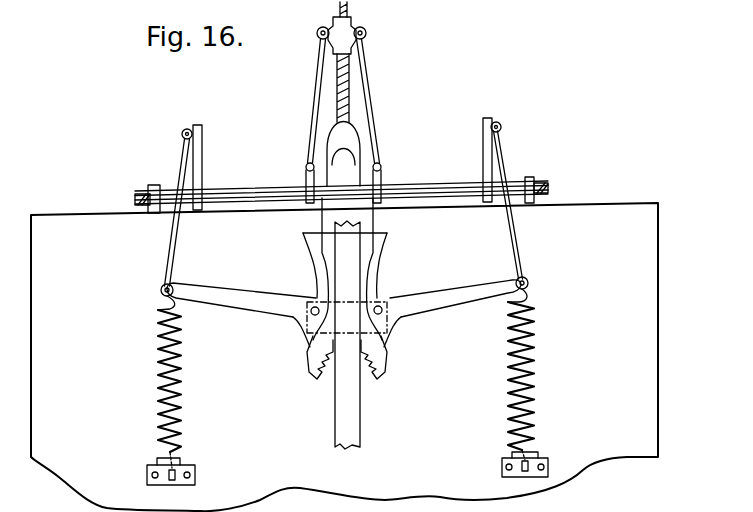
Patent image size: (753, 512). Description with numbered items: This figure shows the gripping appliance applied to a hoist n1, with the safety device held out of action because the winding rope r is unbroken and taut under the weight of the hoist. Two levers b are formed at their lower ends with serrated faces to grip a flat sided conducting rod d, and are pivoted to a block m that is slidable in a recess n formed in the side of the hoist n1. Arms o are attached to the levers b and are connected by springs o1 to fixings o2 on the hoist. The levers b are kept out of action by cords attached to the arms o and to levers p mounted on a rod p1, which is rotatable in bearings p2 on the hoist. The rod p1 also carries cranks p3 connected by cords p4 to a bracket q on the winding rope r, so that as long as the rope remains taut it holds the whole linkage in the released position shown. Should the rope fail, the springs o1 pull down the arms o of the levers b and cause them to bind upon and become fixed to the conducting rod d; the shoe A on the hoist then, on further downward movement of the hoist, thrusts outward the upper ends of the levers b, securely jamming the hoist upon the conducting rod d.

The winding rope r is at (350, 9).
The bracket q is at (340, 27).
The cords p4 is at (312, 113).
The cranks p3 is at (311, 182).
The levers p is at (204, 154).
The bearings p2 is at (153, 196).
The rod p1 is at (462, 194).
The shoe A is at (368, 219).
The conducting rod d is at (350, 407).
The levers b is at (322, 270).
The recess n is at (380, 254).
The block m is at (330, 327).
The arms o is at (207, 288).
The springs o1 is at (207, 353).
The fixings o2 is at (217, 440).
The hoist n1 is at (63, 418).